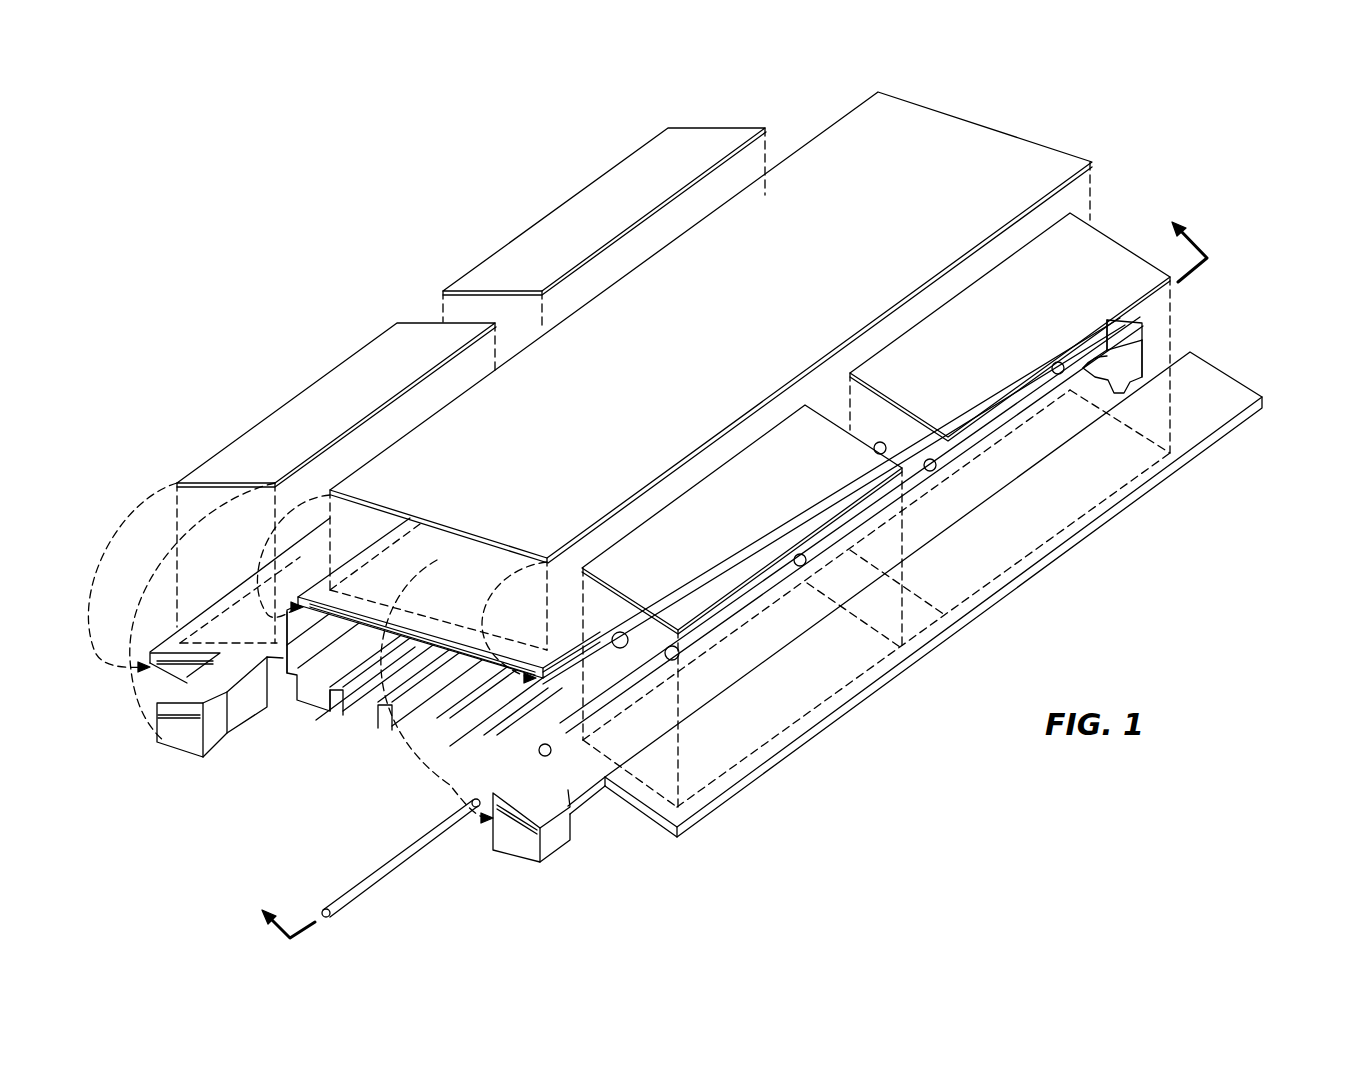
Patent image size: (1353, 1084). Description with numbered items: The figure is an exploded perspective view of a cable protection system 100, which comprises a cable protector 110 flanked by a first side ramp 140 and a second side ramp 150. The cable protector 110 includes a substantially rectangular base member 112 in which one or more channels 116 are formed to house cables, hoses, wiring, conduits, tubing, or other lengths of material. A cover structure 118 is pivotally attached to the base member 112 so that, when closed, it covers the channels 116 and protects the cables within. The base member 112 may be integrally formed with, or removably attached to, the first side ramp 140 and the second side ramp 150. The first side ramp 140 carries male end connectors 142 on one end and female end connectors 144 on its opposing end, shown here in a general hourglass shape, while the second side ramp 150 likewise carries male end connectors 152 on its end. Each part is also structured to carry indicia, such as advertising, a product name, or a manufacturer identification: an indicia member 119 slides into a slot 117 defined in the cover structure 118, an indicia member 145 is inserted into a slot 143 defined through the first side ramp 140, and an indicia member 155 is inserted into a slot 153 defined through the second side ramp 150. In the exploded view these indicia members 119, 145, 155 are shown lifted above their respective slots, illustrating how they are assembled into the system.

The cable protection system 100 is at (1140, 187).
The cable protector 110 is at (407, 770).
The base member 112 is at (337, 722).
The channels 116 is at (314, 692).
The slot 117 is at (372, 692).
The cover structure 118 is at (277, 707).
The indicia member 119 is at (748, 321).
The first side ramp 140 is at (892, 606).
The male end connectors 142 is at (531, 848).
The slot 143 is at (497, 838).
The female end connectors 144 is at (1157, 362).
The indicia member 145 is at (1034, 335).
The second side ramp 150 is at (256, 632).
The male end connectors 152 is at (187, 743).
The slot 153 is at (186, 727).
The indicia member 155 is at (626, 217).